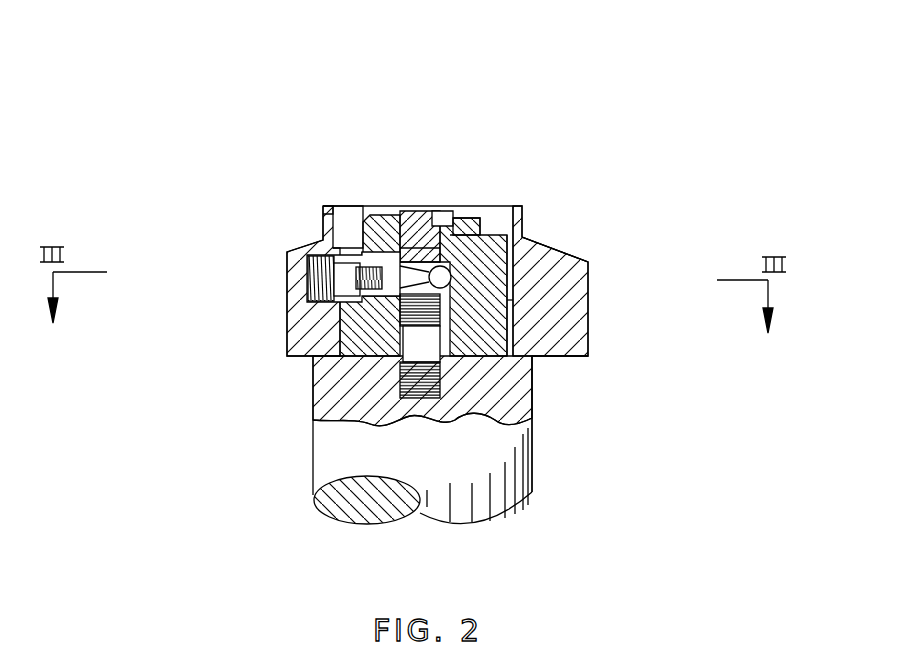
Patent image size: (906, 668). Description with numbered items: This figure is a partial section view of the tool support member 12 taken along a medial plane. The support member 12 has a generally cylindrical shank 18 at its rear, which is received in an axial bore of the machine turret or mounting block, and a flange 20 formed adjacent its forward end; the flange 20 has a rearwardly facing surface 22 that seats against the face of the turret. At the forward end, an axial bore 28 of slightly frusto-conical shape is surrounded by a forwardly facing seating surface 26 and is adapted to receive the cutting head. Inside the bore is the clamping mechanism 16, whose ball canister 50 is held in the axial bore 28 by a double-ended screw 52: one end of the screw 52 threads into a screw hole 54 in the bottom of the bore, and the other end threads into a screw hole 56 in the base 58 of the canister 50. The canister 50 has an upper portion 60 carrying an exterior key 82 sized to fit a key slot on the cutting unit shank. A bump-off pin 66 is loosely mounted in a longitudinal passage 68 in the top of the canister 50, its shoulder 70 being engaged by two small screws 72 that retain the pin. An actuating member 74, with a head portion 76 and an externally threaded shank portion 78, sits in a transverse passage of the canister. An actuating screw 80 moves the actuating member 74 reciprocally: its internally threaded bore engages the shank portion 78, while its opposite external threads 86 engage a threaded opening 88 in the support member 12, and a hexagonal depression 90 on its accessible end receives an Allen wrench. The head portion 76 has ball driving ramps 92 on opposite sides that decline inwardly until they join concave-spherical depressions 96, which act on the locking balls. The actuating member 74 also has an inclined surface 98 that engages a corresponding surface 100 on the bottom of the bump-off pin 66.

The support member 12 is at (311, 487).
The clamping mechanism 16 is at (345, 188).
The shank 18 is at (534, 490).
The flange 20 is at (592, 264).
The rearwardly facing surface 22 is at (562, 358).
The seating surface 26 is at (325, 205).
The axial bore 28 is at (358, 210).
The ball canister 50 is at (388, 205).
The double-ended screw 52 is at (437, 395).
The screw hole 54 is at (357, 407).
The screw hole 56 is at (524, 458).
The base 58 is at (335, 392).
The upper portion 60 is at (360, 235).
The bump-off pin 66 is at (424, 210).
The longitudinal passage 68 is at (480, 212).
The shoulder 70 is at (401, 210).
The small screws 72 is at (446, 211).
The actuating member 74 is at (345, 335).
The head portion 76 is at (524, 237).
The shank portion 78 is at (378, 306).
The actuating screw 80 is at (293, 274).
The key 82 is at (506, 293).
The external threads 86 is at (330, 262).
The threaded opening 88 is at (312, 314).
The hexagonal depression 90 is at (335, 278).
The ball driving ramps 92 is at (533, 410).
The concave-spherical depressions 96 is at (507, 302).
The inclined surface 98 is at (526, 215).
The surface 100 is at (430, 276).